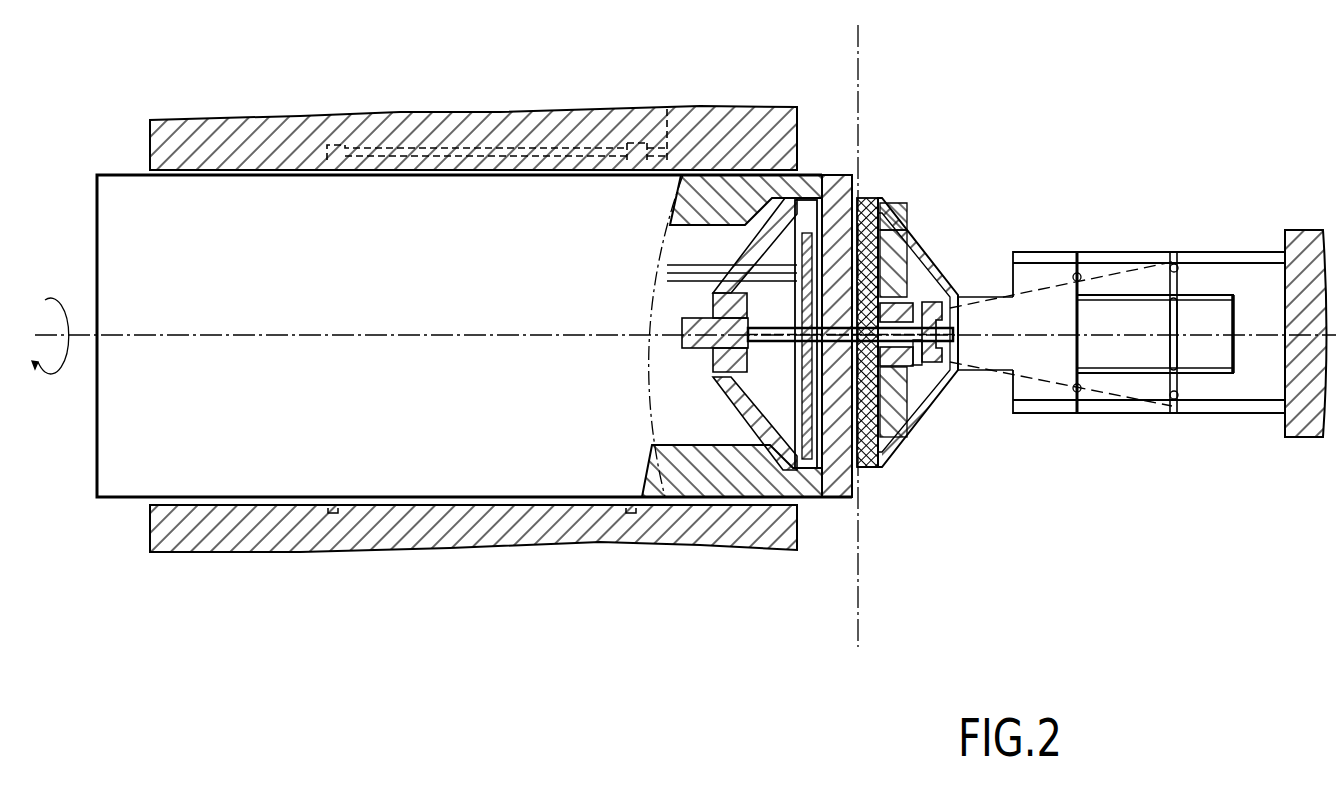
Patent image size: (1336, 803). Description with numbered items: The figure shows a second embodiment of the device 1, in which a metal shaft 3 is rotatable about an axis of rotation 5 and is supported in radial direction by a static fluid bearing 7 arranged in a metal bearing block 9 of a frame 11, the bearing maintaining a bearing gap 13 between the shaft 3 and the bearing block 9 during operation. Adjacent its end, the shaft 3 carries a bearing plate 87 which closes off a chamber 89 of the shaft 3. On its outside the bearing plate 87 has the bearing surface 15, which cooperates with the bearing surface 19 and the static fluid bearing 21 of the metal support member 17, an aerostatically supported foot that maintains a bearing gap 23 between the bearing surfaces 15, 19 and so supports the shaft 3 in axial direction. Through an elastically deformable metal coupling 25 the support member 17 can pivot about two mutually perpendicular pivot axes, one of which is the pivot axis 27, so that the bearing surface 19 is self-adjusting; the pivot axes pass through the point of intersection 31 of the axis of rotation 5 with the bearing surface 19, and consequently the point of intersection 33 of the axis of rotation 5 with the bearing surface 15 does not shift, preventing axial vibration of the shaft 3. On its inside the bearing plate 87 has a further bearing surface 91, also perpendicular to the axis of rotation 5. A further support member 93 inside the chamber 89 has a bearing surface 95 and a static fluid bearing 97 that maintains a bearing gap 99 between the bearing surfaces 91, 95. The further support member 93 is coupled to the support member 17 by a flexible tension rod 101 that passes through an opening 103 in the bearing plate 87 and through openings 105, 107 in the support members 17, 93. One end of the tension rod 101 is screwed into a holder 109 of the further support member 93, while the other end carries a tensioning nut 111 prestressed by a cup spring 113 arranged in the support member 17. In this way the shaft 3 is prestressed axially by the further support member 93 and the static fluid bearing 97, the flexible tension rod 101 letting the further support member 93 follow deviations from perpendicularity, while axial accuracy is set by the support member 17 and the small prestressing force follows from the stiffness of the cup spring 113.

The device 1 is at (172, 567).
The shaft 3 is at (110, 484).
The axis of rotation 5 is at (160, 340).
The static fluid bearing 7 is at (400, 150).
The bearing block 9 is at (740, 128).
The frame 11 is at (1303, 230).
The bearing gap 13 is at (219, 169).
The bearing surface 15 is at (858, 182).
The support member 17 is at (922, 420).
The bearing surface 19 is at (893, 206).
The static fluid bearing 21 is at (928, 247).
The bearing gap 23 is at (870, 470).
The coupling 25 is at (1226, 400).
The pivot axis 27 is at (860, 56).
The point of intersection 31 is at (895, 350).
The point of intersection 33 is at (892, 437).
The bearing plate 87 is at (836, 186).
The chamber 89 is at (680, 430).
The further bearing surface 91 is at (806, 452).
The further support member 93 is at (770, 246).
The bearing surface 95 is at (778, 424).
The static fluid bearing 97 is at (667, 272).
The bearing gap 99 is at (748, 380).
The flexible tension rod 101 is at (715, 358).
The opening 103 is at (830, 470).
The opening 105 is at (882, 300).
The opening 107 is at (800, 320).
The holder 109 is at (682, 325).
The tensioning nut 111 is at (932, 362).
The cup spring 113 is at (918, 366).